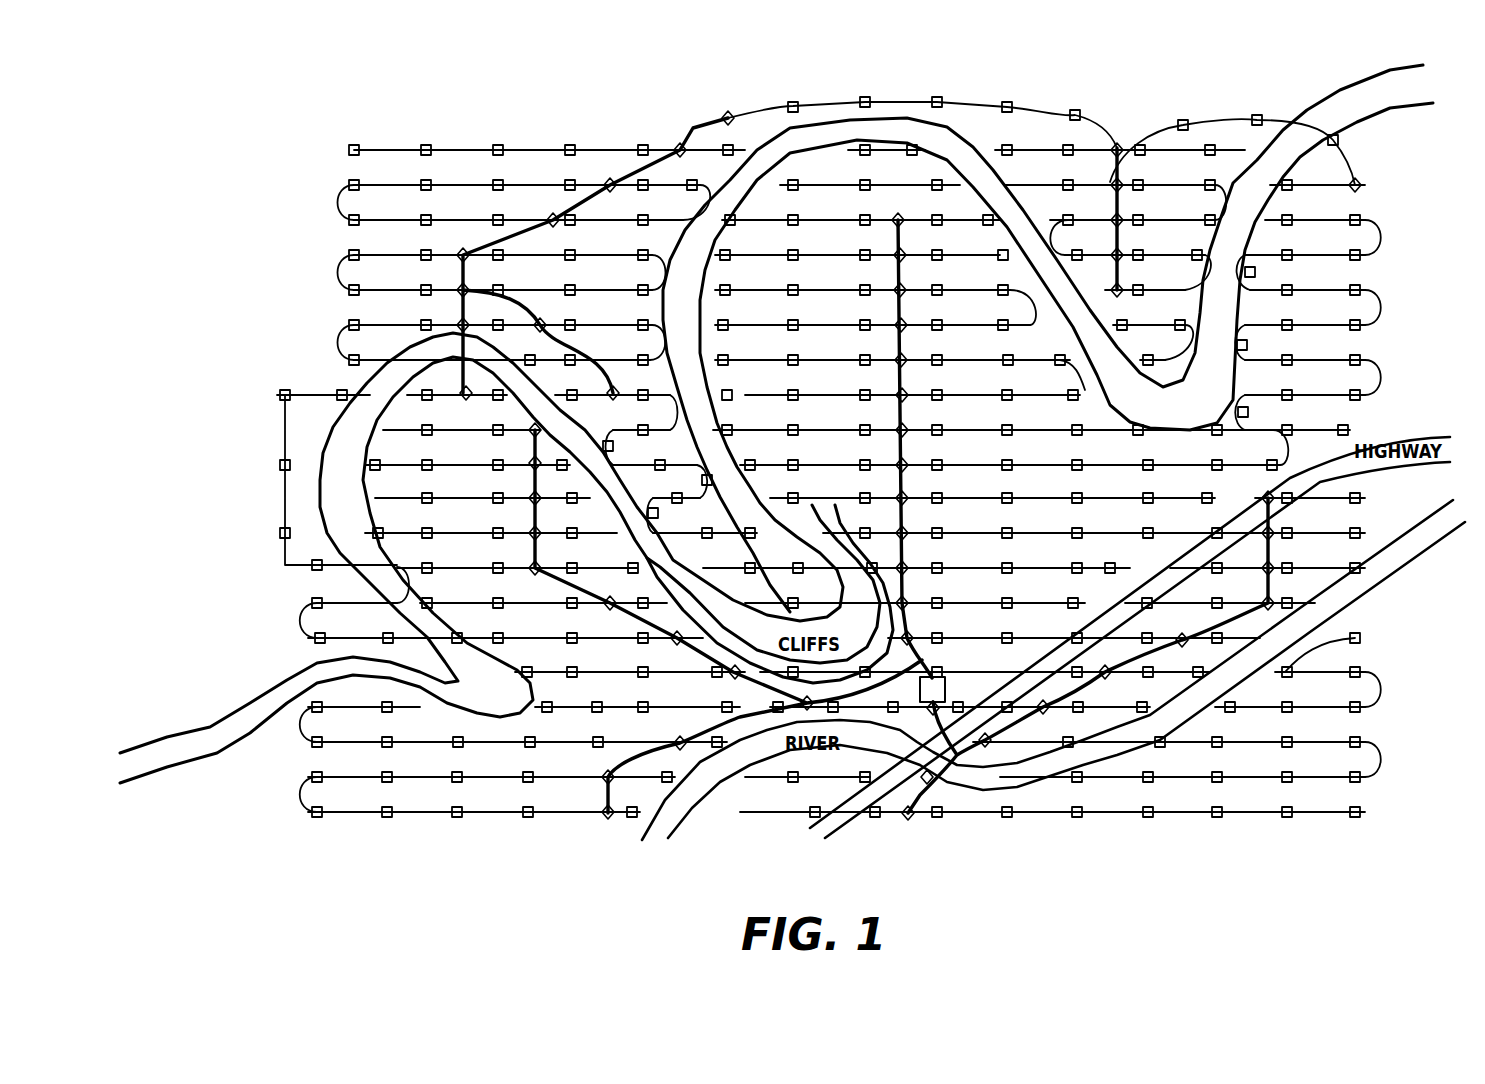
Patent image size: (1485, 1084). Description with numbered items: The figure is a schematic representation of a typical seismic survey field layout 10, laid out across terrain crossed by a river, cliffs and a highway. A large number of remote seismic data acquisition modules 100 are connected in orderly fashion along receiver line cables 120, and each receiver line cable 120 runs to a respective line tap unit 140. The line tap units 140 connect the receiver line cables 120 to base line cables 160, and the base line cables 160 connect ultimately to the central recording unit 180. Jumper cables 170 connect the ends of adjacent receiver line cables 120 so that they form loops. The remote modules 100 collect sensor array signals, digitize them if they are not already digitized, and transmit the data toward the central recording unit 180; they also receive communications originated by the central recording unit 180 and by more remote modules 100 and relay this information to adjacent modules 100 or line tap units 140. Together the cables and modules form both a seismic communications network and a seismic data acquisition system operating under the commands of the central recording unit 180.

The seismic survey 10 is at (866, 100).
The remote seismic data acquisition module 100 is at (354, 145).
The receiver line cable 120 is at (968, 105).
The line tap unit 140 is at (549, 215).
The base line cable 160 is at (633, 177).
The jumper cable 170 is at (338, 205).
The central recording unit 180 is at (945, 690).